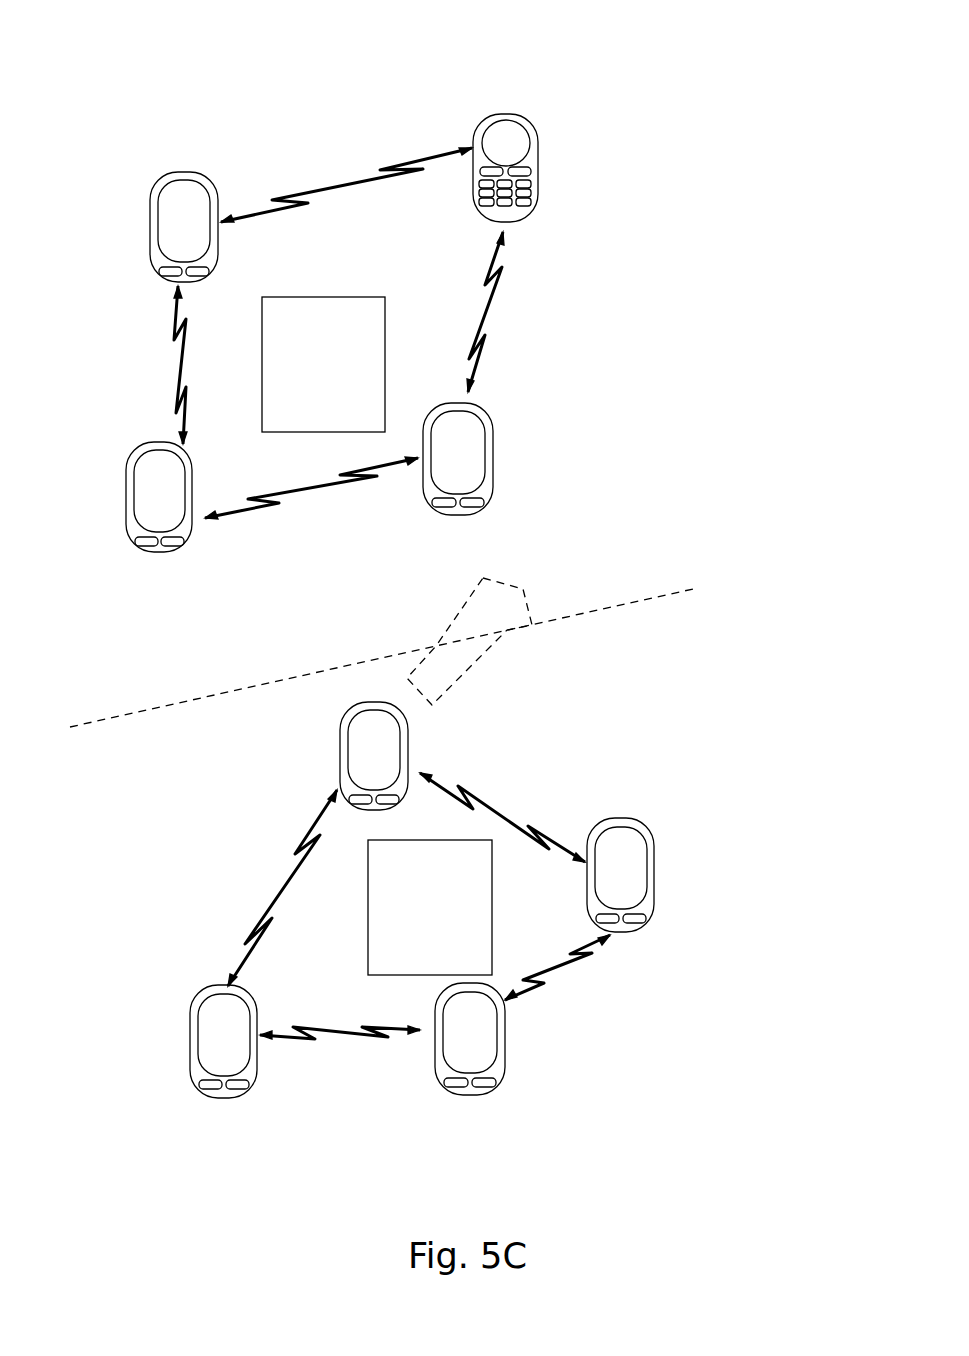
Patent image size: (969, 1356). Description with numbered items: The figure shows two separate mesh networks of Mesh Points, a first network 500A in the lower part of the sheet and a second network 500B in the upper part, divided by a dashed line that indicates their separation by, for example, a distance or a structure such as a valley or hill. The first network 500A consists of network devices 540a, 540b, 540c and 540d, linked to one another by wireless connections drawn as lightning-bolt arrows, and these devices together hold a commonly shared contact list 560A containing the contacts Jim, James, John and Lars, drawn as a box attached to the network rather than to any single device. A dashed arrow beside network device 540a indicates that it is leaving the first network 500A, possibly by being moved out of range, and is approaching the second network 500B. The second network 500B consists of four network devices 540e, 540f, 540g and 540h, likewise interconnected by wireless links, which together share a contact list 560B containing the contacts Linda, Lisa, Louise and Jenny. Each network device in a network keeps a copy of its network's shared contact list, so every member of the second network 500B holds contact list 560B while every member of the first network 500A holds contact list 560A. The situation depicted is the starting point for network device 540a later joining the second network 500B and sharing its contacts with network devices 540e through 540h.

The first network 500A is at (150, 834).
The second network 500B is at (268, 52).
The network device 540a is at (337, 763).
The network device 540b is at (655, 875).
The network device 540c is at (235, 1103).
The network device 540d is at (473, 1090).
The network device 540e is at (155, 274).
The network device 540f is at (193, 542).
The network device 540g is at (437, 513).
The network device 540h is at (477, 208).
The contact list 560A is at (368, 907).
The contact list 560B is at (262, 397).